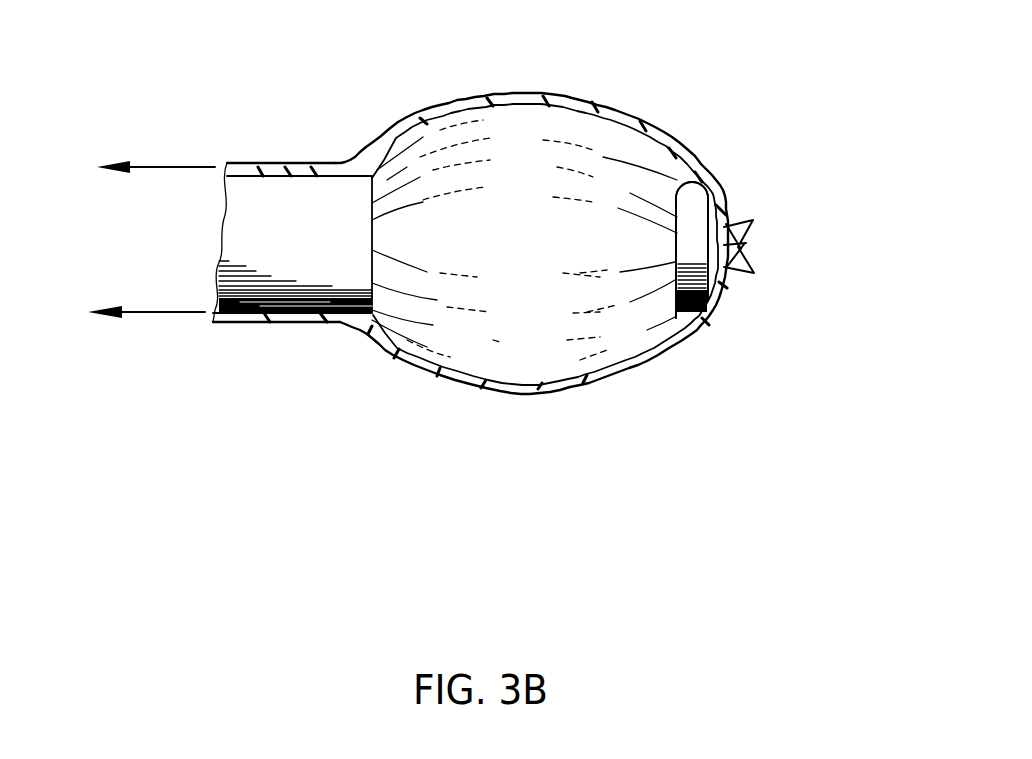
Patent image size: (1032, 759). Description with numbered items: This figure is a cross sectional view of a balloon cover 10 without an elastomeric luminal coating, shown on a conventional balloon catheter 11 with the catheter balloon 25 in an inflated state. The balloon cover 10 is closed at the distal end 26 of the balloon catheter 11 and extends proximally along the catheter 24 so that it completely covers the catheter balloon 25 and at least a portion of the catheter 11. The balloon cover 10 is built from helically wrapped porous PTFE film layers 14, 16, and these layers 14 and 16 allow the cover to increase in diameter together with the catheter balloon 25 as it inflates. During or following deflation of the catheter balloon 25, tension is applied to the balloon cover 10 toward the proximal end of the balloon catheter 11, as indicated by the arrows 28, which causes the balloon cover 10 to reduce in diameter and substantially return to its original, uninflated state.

The balloon cover 10 is at (493, 347).
The balloon catheter 11 is at (292, 162).
The layer of balloon cover 14 is at (686, 345).
The layer of balloon cover 16 is at (686, 345).
The catheter 24 is at (297, 313).
The catheter balloon 25 is at (507, 393).
The distal end 26 is at (727, 266).
The arrows 28 is at (150, 308).